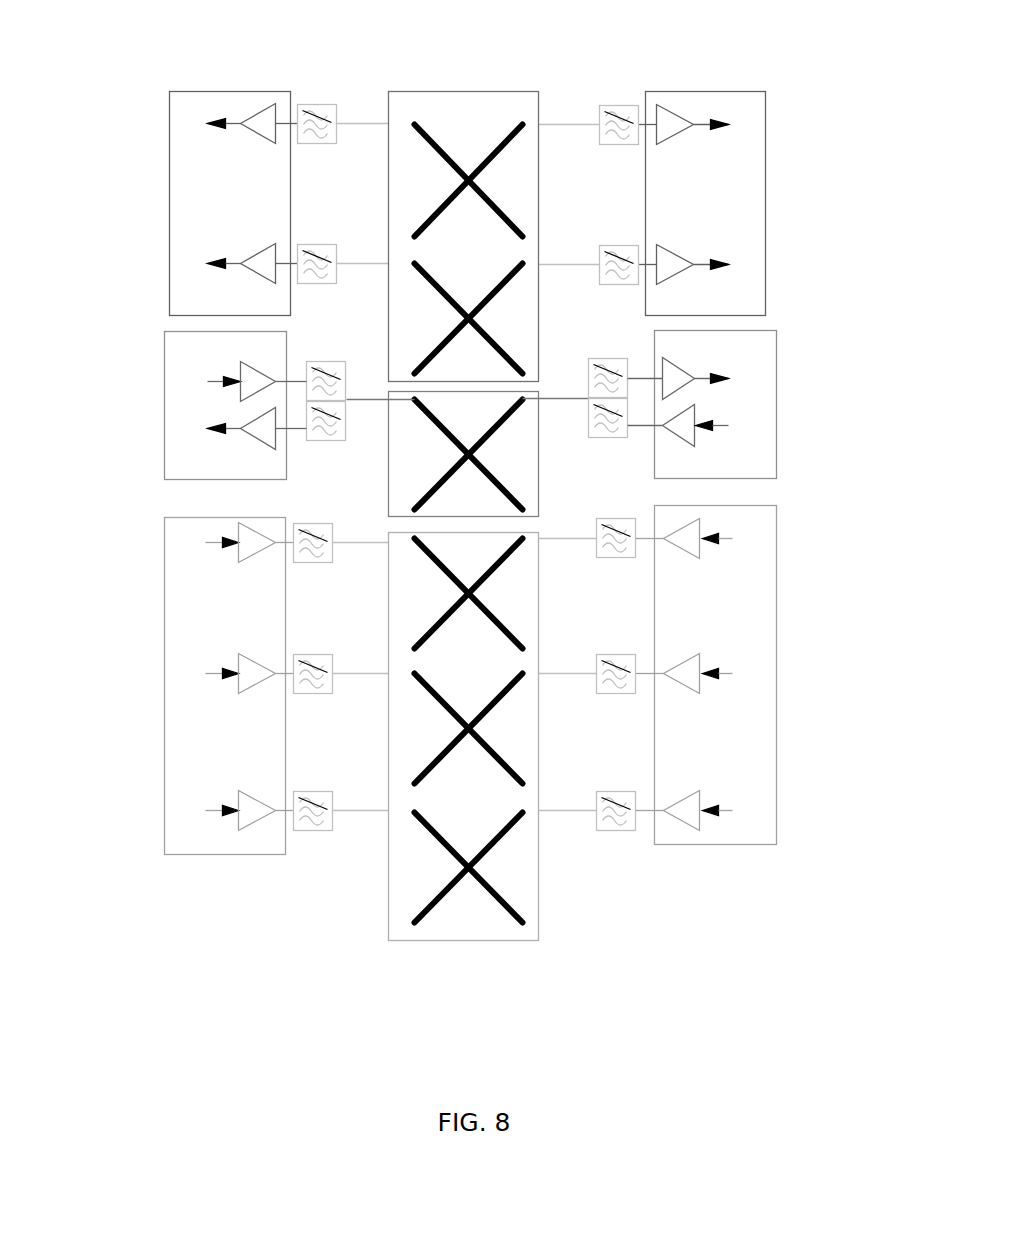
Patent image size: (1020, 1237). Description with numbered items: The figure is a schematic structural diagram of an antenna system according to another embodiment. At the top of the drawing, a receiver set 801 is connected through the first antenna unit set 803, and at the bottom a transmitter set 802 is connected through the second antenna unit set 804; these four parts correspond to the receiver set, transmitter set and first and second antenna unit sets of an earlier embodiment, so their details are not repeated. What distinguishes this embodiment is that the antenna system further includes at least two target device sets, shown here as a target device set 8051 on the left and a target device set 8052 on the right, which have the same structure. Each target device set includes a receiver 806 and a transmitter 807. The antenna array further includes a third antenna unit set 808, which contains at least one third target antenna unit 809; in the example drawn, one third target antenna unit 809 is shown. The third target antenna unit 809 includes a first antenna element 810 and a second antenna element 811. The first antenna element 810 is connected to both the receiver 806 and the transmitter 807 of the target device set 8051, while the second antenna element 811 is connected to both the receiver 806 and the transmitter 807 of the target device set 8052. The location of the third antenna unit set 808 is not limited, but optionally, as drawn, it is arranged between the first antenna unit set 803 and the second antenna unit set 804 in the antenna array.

The receiver set 801 is at (497, 161).
The transmitter set 802 is at (483, 716).
The first antenna unit set 803 is at (484, 194).
The second antenna unit set 804 is at (469, 772).
The target device set 8051 is at (165, 406).
The target device set 8052 is at (775, 405).
The receiver 806 is at (480, 461).
The transmitter 807 is at (469, 346).
The third antenna unit set 808 is at (485, 473).
The third target antenna unit 809 is at (293, 477).
The first antenna element 810 is at (236, 333).
The second antenna element 811 is at (702, 322).